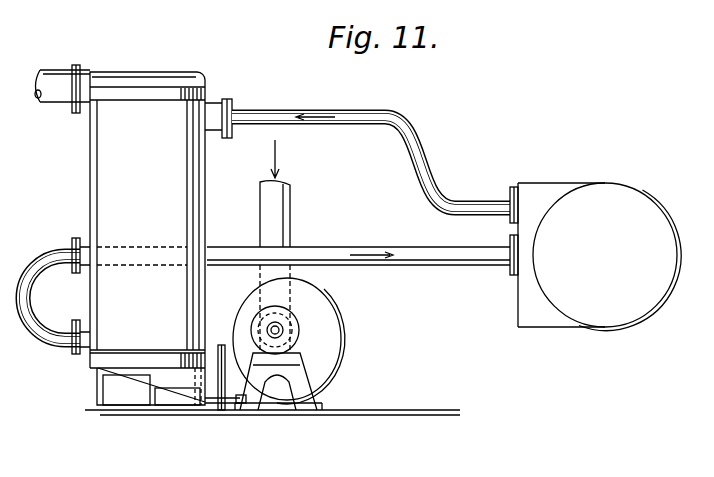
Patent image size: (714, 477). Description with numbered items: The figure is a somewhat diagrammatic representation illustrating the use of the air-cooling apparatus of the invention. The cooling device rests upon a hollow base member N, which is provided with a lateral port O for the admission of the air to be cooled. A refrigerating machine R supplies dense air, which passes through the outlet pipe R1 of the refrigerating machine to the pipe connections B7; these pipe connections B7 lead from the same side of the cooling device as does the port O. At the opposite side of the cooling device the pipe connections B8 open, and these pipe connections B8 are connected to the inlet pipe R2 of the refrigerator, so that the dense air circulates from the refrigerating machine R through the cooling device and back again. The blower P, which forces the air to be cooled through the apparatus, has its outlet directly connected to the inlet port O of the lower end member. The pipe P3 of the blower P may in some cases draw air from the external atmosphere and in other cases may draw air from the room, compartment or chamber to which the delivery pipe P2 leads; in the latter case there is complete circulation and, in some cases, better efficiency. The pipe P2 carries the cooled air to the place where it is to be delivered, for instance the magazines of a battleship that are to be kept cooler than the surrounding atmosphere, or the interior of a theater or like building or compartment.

The cool air delivery pipe P2 is at (50, 78).
The pipe connections B7 is at (213, 110).
The outlet pipe of the refrigerating machine R1 is at (390, 113).
The refrigerating machine R is at (533, 190).
The inlet pipe of the refrigerator R2 is at (346, 250).
The pipe connections B8 is at (89, 352).
The pipe of the blower P3 is at (270, 219).
The blower P is at (307, 358).
The hollow base member N is at (135, 369).
The lateral port O is at (212, 402).